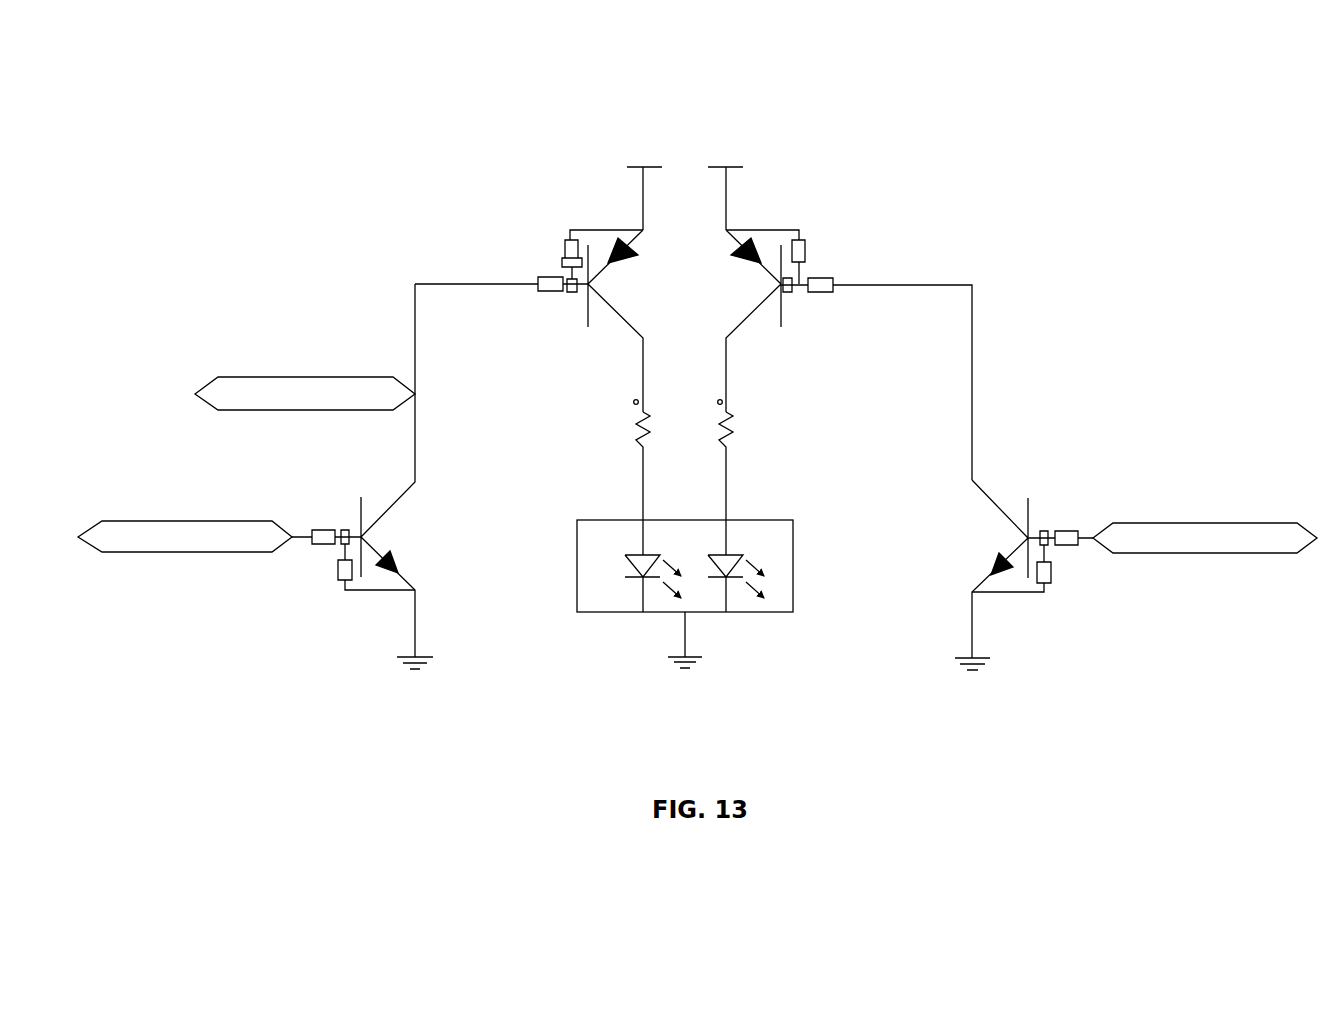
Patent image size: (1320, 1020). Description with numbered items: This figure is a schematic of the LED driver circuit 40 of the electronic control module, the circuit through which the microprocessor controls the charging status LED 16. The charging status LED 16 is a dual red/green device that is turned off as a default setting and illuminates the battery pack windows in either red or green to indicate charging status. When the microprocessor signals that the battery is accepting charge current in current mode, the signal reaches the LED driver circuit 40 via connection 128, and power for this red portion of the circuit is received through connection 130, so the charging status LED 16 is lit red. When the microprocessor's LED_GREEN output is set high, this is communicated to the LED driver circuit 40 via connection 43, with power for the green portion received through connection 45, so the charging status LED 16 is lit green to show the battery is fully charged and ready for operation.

The LED driver circuit 40 is at (275, 86).
The connection 130 is at (643, 134).
The connection 45 is at (726, 134).
The connection 128 is at (145, 521).
The connection 43 is at (1265, 523).
The charging status LED 16 is at (628, 612).